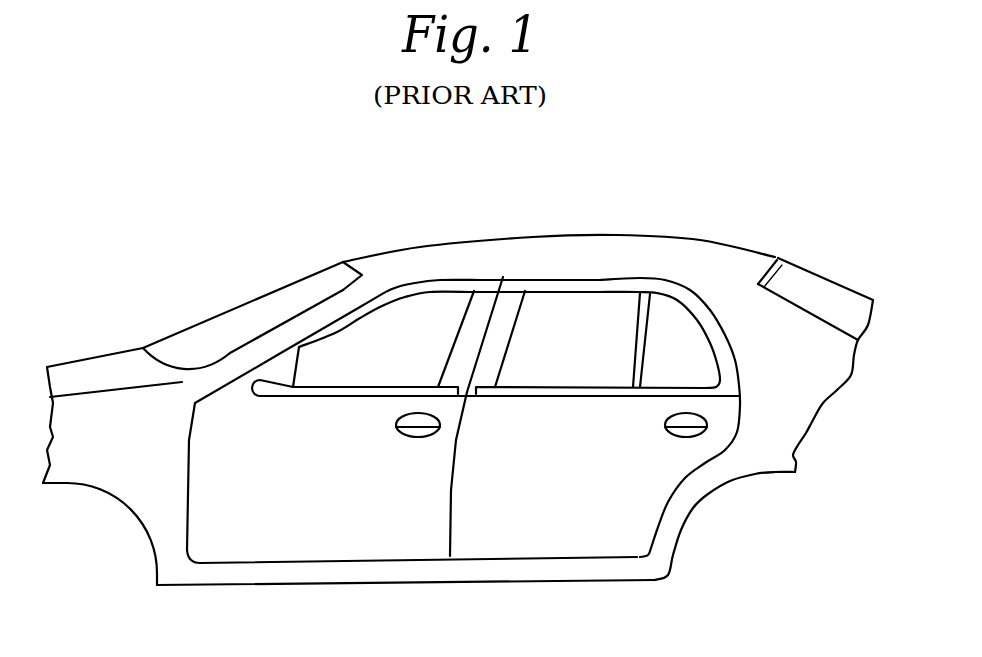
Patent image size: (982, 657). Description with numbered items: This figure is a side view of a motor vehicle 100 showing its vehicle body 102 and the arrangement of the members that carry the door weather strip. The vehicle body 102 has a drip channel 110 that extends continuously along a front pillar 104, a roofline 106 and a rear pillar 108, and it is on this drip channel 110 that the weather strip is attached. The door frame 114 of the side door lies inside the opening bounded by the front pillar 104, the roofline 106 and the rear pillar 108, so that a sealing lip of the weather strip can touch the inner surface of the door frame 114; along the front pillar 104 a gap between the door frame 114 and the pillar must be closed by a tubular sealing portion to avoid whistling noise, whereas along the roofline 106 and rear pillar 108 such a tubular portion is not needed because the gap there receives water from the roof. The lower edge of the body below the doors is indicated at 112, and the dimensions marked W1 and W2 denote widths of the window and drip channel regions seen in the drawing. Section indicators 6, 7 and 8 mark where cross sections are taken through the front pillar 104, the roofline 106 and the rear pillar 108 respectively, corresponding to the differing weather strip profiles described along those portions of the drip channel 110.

The vehicle body 100 is at (442, 226).
The vehicle body 102 is at (487, 245).
The front pillar 104 is at (230, 362).
The roofline 106 is at (625, 270).
The rear pillar 108 is at (810, 323).
The drip channel 110 is at (563, 277).
The rocker panel 112 is at (323, 557).
The door frame 114 is at (343, 310).
The window opening width W1 is at (258, 375).
The weatherstrip width W2 is at (432, 290).
The section line 6(14) 6 is at (263, 290).
The section line 7(15) 7 is at (518, 178).
The section line 8(16) 8 is at (743, 288).